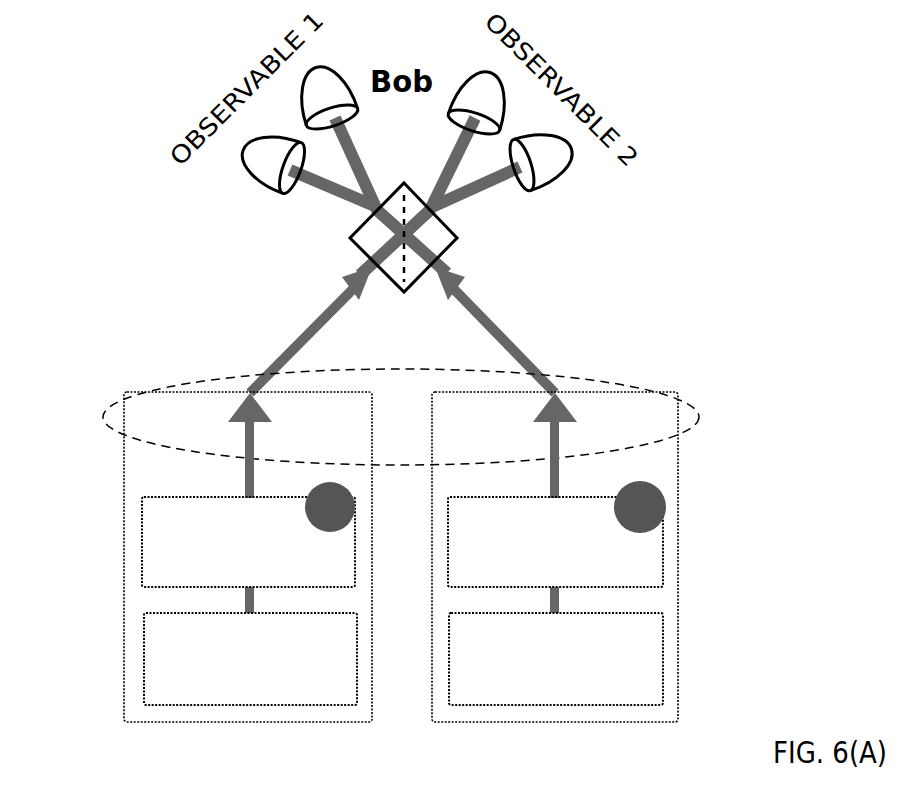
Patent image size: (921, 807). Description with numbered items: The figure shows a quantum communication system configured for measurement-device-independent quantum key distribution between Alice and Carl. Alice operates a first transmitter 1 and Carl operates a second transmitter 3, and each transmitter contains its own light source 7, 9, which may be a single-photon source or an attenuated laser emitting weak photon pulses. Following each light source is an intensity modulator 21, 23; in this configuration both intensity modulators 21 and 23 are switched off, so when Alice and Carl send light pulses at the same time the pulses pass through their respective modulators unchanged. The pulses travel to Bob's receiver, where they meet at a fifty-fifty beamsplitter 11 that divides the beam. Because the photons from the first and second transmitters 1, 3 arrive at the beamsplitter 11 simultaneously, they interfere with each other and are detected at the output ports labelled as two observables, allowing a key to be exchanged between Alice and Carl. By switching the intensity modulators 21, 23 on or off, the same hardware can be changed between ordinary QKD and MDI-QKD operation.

The first transmitter 1 is at (203, 556).
The second transmitter 3 is at (632, 594).
The light source 7 is at (155, 709).
The light source 9 is at (486, 710).
The beamsplitter 11 is at (345, 240).
The intensity modulator 21 is at (137, 508).
The intensity modulator 23 is at (664, 554).